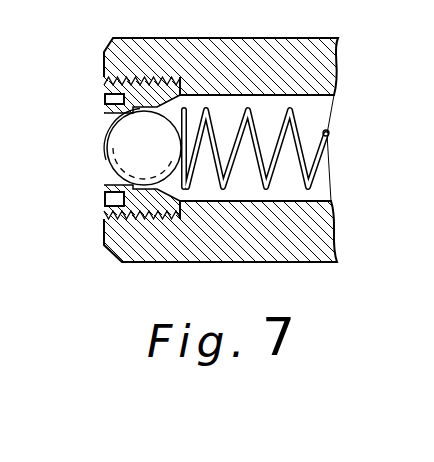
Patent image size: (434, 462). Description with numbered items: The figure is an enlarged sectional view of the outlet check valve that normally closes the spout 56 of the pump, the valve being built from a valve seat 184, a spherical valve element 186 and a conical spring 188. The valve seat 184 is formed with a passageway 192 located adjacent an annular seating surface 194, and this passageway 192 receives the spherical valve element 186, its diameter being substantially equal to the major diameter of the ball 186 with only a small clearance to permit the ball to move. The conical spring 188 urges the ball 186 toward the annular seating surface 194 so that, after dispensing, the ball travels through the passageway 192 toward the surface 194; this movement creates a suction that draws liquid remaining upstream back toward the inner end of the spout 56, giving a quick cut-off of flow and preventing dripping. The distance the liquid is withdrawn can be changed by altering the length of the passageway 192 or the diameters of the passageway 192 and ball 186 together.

The spout 56 is at (223, 43).
The valve seat 184 is at (110, 215).
The spherical valve element 186 is at (144, 148).
The conical spring 188 is at (319, 158).
The passageway 192 is at (116, 128).
The annular seating surface 194 is at (139, 186).